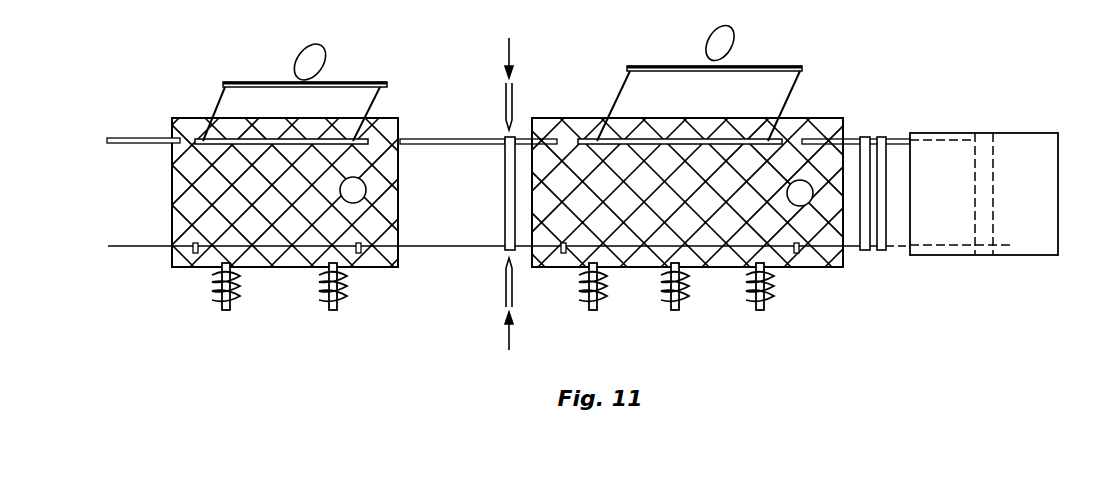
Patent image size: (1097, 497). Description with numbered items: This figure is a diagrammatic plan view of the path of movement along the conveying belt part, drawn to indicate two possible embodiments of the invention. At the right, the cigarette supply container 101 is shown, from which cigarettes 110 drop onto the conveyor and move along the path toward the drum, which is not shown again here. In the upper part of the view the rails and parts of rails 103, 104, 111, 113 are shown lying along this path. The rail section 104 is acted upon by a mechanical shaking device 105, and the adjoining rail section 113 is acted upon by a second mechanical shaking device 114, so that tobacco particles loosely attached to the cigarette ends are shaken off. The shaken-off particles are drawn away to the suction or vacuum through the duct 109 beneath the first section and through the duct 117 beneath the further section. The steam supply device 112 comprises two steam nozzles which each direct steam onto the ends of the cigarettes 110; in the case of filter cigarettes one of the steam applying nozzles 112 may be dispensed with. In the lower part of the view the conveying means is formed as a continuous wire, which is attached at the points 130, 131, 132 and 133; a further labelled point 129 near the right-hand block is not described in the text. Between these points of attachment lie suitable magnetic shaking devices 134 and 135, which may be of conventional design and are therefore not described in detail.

The cigarette supply container 101 is at (962, 128).
The conveyor belt 103 is at (843, 134).
The conveyor belt section 104 is at (692, 138).
The shaking device 105 is at (704, 46).
The duct 109 is at (787, 194).
The cigarettes 110 is at (505, 204).
The rail 111 is at (444, 138).
The steam supply device 112 is at (514, 102).
The further rail part 113 is at (268, 143).
The shaking device 114 is at (297, 61).
The duct 117 is at (340, 191).
The stop pin 129 is at (845, 252).
The attachment point 130 is at (797, 253).
The attachment point 131 is at (563, 254).
The attachment point 132 is at (358, 253).
The attachment point 133 is at (198, 262).
The magnetic shaking device 134 is at (767, 322).
The magnetic shaking device 135 is at (332, 322).